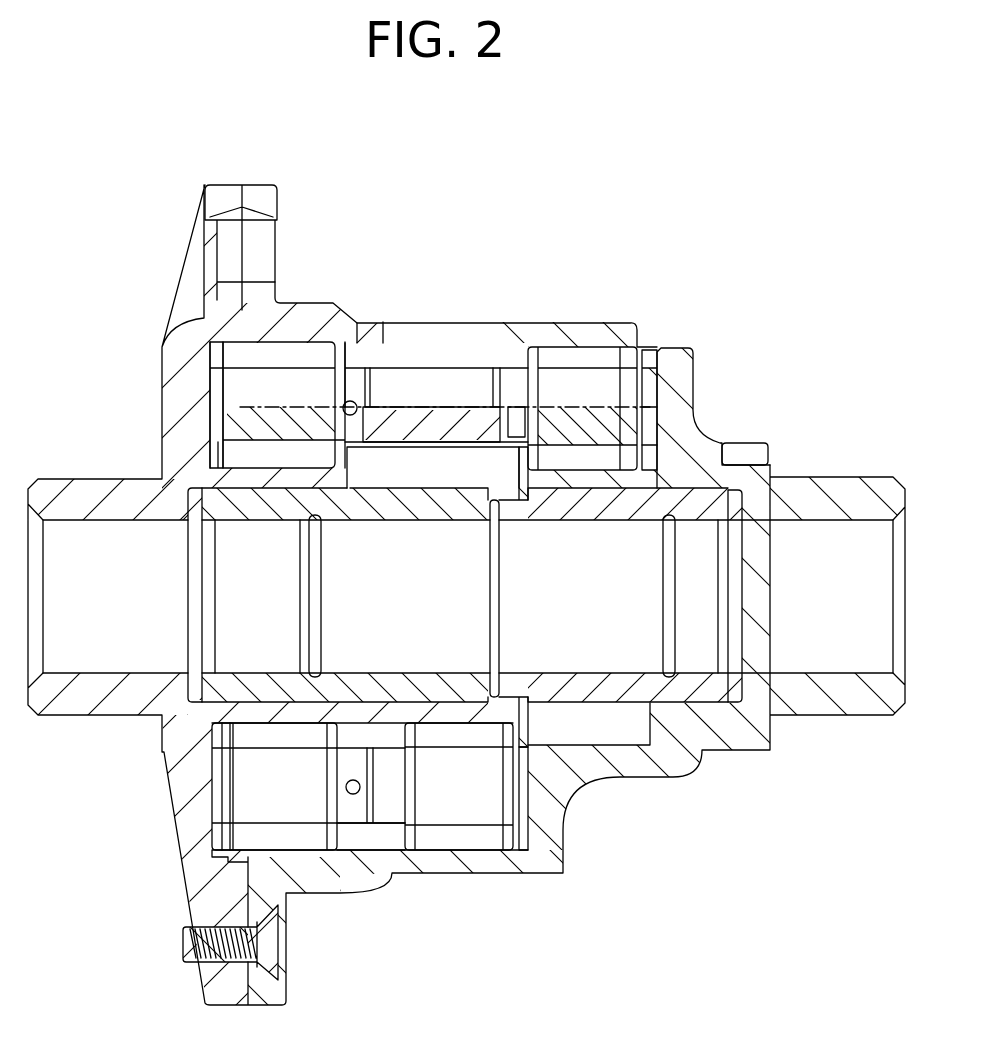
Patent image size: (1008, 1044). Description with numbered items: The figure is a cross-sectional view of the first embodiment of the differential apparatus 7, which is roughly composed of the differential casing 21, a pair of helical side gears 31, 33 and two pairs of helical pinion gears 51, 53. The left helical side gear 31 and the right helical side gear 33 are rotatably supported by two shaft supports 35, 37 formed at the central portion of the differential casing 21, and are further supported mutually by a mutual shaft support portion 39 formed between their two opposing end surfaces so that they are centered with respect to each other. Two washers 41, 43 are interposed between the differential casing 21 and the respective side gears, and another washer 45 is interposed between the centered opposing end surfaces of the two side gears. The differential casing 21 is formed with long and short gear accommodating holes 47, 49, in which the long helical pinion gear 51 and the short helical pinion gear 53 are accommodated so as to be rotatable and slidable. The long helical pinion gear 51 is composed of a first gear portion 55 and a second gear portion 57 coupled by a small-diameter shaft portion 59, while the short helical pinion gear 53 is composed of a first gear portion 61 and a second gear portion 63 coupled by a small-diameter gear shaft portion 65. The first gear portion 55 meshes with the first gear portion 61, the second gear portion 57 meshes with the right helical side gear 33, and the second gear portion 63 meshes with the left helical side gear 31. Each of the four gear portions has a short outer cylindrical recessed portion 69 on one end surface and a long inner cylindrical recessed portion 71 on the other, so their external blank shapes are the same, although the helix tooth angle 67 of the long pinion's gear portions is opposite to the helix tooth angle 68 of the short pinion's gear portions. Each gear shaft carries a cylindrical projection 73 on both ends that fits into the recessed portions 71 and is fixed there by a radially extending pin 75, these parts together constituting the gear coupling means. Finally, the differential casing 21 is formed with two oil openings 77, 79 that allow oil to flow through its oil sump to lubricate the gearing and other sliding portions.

The differential apparatus 7 is at (620, 232).
The differential casing 21 is at (251, 186).
The left helical side gear 31 is at (447, 462).
The right helical side gear 33 is at (603, 717).
The shaft support 35 is at (243, 489).
The shaft support 37 is at (712, 488).
The mutual shaft support portion 39 is at (507, 503).
The washer 41 is at (197, 672).
The washer 43 is at (735, 665).
The washer 45 is at (528, 697).
The long gear accommodating hole 47 is at (363, 343).
The short gear accommodating hole 49 is at (390, 850).
The long helical pinion gear 51 is at (650, 338).
The short helical pinion gear 53 is at (524, 842).
The first gear portion 55 is at (289, 350).
The second gear portion 57 is at (586, 350).
The small-diameter shaft portion 59 is at (423, 387).
The first gear portion 61 is at (321, 838).
The second gear portion 63 is at (431, 834).
The small-diameter gear shaft portion 65 is at (368, 842).
The helix tooth angle 67 is at (423, 338).
The helix tooth angle 68 is at (362, 786).
The short outer cylindrical recessed portion 69 is at (212, 441).
The long inner cylindrical recessed portion 71 is at (527, 420).
The cylindrical projection 73 is at (378, 430).
The pin 75 is at (515, 422).
The oil opening 77 is at (454, 327).
The oil opening 79 is at (666, 358).